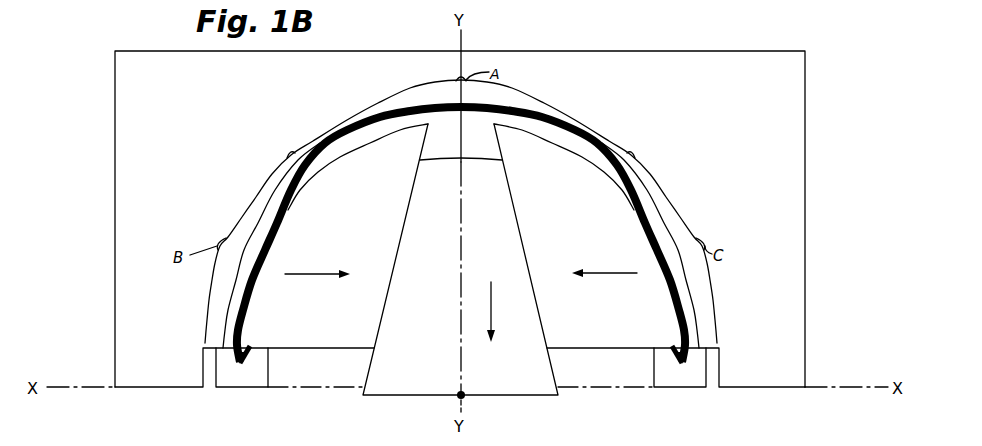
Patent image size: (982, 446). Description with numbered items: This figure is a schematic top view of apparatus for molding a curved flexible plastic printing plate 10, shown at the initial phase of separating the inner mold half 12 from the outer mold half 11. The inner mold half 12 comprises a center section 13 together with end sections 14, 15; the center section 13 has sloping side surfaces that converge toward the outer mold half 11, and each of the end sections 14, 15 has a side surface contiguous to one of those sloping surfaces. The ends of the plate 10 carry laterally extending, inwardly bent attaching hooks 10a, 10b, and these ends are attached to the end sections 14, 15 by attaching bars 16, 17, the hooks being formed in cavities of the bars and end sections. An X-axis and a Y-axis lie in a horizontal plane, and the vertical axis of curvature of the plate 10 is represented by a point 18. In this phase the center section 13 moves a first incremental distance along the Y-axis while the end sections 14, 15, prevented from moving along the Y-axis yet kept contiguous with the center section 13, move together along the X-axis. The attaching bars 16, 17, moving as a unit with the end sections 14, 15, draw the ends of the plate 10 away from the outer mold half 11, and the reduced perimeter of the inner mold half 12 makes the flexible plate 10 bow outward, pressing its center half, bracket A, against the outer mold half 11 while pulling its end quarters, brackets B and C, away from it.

The curved flexible plastic printing plate 10 is at (643, 208).
The attaching hook 10a is at (251, 346).
The attaching hook 10b is at (673, 347).
The outer mold half 11 is at (717, 44).
The inner mold half 12 is at (505, 265).
The center section 13 is at (538, 397).
The end section 14 is at (308, 350).
The end section 15 is at (580, 350).
The attaching bar 16 is at (244, 388).
The attaching bar 17 is at (680, 388).
The point representing axis of curvature 18 is at (466, 399).